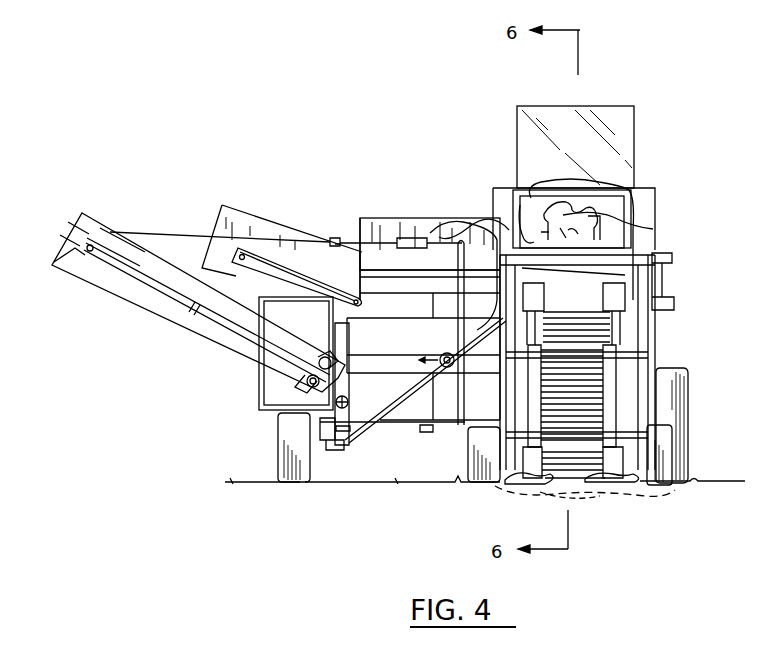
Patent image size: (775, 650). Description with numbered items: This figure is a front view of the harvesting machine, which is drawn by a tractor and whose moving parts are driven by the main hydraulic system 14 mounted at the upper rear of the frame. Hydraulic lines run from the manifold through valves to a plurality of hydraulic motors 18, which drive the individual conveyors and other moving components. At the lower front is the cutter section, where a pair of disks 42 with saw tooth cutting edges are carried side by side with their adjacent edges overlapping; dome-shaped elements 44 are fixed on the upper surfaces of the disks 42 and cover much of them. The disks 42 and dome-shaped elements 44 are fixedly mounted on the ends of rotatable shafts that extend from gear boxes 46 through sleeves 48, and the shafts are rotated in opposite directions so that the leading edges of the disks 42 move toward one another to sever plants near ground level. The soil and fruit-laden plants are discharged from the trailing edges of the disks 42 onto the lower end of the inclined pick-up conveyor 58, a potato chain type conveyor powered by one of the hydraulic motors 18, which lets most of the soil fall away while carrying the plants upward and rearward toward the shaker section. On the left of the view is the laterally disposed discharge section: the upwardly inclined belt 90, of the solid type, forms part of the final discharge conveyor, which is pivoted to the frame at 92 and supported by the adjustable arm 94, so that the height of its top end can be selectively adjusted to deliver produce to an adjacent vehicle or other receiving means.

The main hydraulic system 14 is at (597, 205).
The hydraulic motors 18 is at (672, 302).
The disks 42 is at (585, 492).
The dome-shaped elements 44 is at (506, 484).
The gear boxes 46 is at (615, 296).
The sleeves 48 is at (535, 406).
The pick-up conveyor 58 is at (560, 463).
The upwardly inclined belt 90 is at (143, 272).
The pivot 92 is at (326, 357).
The adjustable arm 94 is at (186, 238).